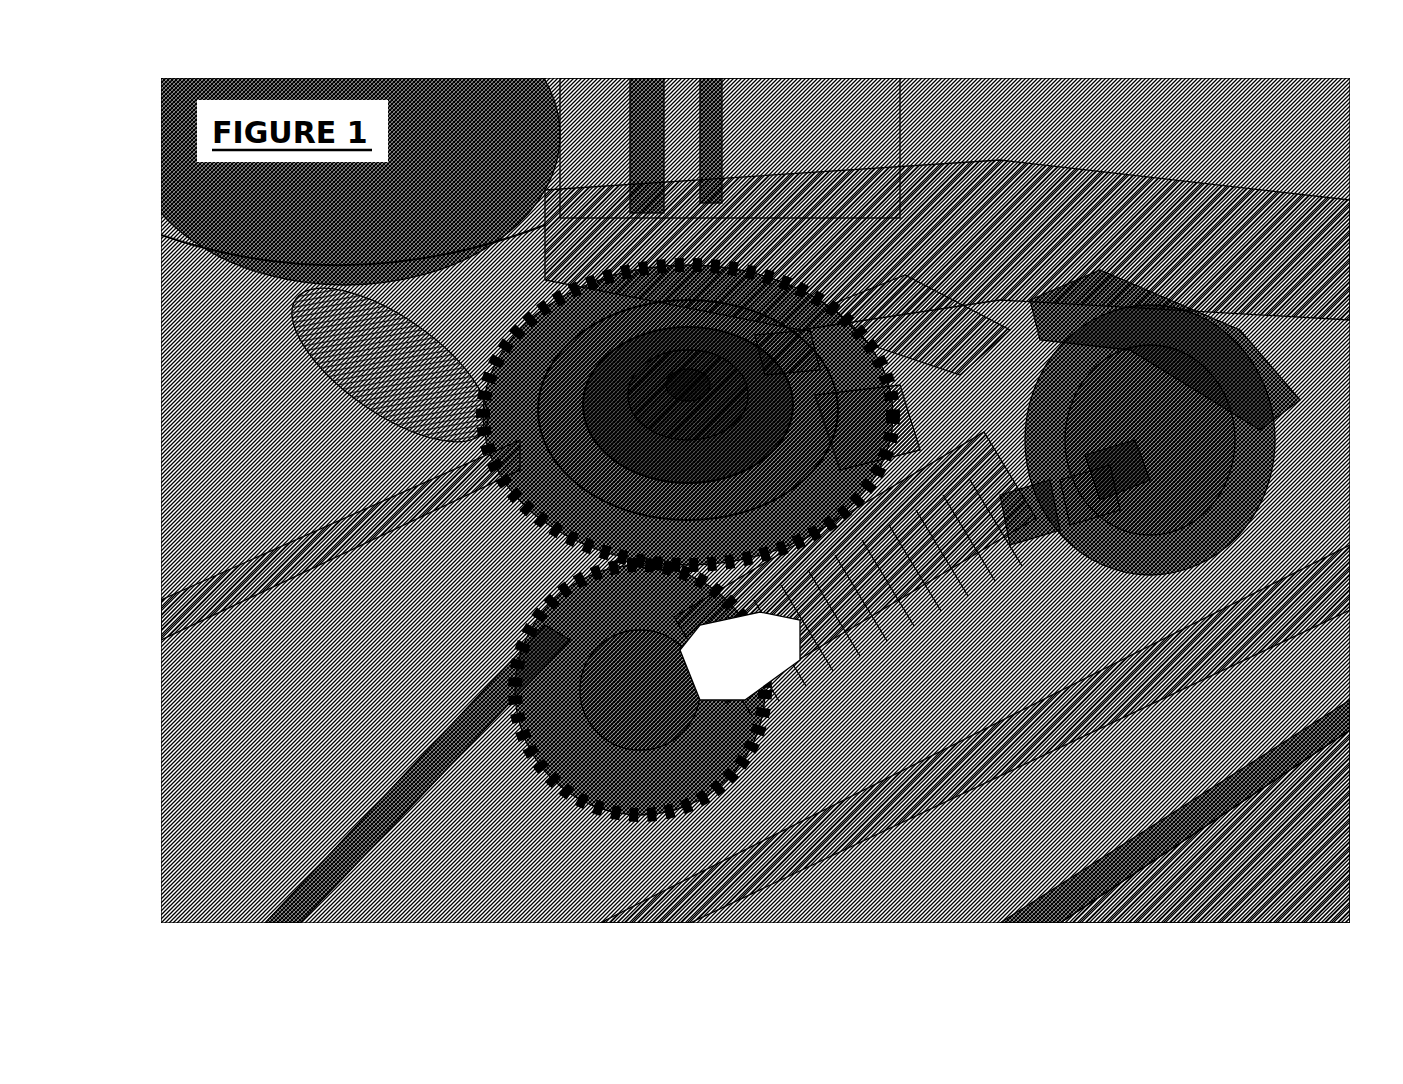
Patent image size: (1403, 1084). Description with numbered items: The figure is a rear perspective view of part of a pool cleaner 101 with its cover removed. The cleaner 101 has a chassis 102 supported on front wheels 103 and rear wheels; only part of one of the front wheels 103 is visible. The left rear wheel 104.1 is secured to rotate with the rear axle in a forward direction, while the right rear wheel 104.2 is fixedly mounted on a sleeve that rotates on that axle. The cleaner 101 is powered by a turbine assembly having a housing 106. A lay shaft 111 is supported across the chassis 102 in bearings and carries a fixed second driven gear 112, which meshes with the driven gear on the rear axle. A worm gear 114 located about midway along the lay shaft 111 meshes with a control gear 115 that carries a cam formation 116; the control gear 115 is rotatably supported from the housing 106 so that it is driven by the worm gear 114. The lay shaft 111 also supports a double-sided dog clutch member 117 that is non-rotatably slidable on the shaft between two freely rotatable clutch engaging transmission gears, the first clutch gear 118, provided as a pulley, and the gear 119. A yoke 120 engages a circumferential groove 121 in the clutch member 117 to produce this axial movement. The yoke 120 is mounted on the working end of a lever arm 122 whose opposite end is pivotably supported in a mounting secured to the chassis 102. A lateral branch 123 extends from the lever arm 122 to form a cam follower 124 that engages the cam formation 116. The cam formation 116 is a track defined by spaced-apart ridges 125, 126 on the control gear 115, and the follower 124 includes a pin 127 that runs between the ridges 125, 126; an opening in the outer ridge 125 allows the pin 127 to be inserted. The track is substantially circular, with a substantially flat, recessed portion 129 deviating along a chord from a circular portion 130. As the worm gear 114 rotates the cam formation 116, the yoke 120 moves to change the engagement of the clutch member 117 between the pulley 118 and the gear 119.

The pool cleaner 101 is at (1292, 128).
The chassis 102 is at (1068, 828).
The front wheels 103 is at (580, 133).
The left rear wheel 104.1 is at (308, 882).
The right rear wheel 104.2 is at (1085, 287).
The housing 106 is at (210, 342).
The lay shaft 111 is at (748, 685).
The second driven gear 112 is at (707, 775).
The worm gear 114 is at (865, 618).
The control gear 115 is at (478, 352).
The cam formation 116 is at (590, 317).
The double-sided dog clutch member 117 is at (1088, 500).
The first clutch gear 118 is at (1027, 510).
The second clutch gear 119 is at (1120, 352).
The yoke 120 is at (1100, 447).
The circumferential groove 121 is at (1105, 480).
The lever arm 122 is at (927, 177).
The lateral branch 123 is at (840, 310).
The cam follower 124 is at (767, 262).
The outer ridge 125 is at (570, 342).
The inner ridge 126 is at (657, 290).
The pin 127 is at (768, 353).
The recessed portion 129 is at (652, 542).
The circular portion 130 is at (820, 418).